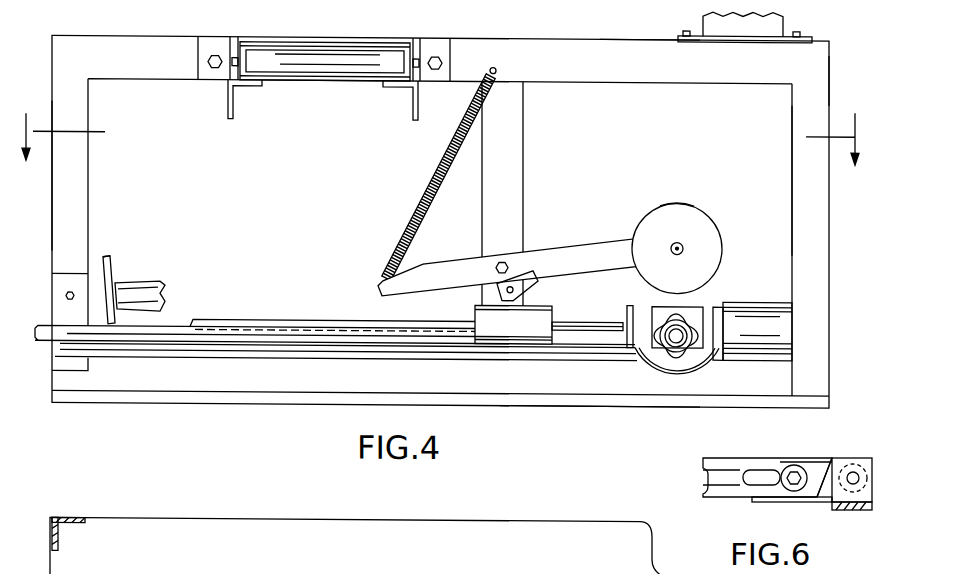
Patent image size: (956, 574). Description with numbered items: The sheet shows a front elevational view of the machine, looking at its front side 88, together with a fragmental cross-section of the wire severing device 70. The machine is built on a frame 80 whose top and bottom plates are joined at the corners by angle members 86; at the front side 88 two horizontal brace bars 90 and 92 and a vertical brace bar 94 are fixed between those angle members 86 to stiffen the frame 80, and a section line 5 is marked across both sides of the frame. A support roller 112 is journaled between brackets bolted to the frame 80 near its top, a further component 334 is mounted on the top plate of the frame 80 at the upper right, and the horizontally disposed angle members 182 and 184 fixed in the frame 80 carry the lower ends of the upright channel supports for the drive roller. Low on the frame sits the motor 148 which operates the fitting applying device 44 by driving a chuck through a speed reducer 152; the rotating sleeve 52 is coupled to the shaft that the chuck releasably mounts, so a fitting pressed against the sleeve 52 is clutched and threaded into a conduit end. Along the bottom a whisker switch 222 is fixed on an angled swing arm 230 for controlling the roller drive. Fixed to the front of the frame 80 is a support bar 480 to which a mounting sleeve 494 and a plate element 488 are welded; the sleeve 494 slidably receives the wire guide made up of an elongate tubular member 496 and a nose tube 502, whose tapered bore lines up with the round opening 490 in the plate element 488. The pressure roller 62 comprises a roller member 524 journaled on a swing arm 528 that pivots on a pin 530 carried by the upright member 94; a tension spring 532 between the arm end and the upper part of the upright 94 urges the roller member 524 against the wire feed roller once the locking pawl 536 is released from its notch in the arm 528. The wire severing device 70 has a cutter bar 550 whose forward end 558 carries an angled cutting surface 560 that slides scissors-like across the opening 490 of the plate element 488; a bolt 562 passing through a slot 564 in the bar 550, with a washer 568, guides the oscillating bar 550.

In FIG. 4, the section line 5- 5 is at (440, 127).
In FIG. 4, the power actuated fitting applying device 44 is at (673, 358).
In FIG. 4, the rotating sleeve 52 is at (695, 350).
In FIG. 4, the pressure roller 62 is at (725, 227).
In FIG. 6, the wire severing device 70 is at (833, 452).
In FIG. 4, the frame 80 is at (830, 61).
In FIG. 4, the angle members 86 is at (73, 212).
In FIG. 4, the front side 88 is at (128, 418).
In FIG. 4, the horizontal brace bar 90 is at (634, 78).
In FIG. 4, the horizontal brace bar 92 is at (588, 389).
In FIG. 4, the vertical brace bar 94 is at (513, 161).
In FIG. 4, the support roller 112 is at (322, 60).
In FIG. 4, the motor 148 is at (765, 308).
In FIG. 4, the speed reducer 152 is at (698, 303).
In FIG. 4, the angle member 182 is at (412, 106).
In FIG. 4, the angle member 184 is at (228, 105).
In FIG. 4, the whisker switch 222 is at (146, 281).
In FIG. 4, the angled swing arm 230 is at (143, 238).
In FIG. 4, the motor 334 is at (775, 19).
In FIG. 6, the support bar 480 is at (858, 510).
In FIG. 4, the plate element 488 is at (628, 302).
In FIG. 6, the plate element 488 is at (837, 490).
In FIG. 6, the opening 490 is at (855, 470).
In FIG. 4, the mounting sleeve 494 is at (535, 320).
In FIG. 4, the elongate tubular member 496 is at (315, 321).
In FIG. 4, the nose tube 502 is at (578, 320).
In FIG. 4, the roller member 524 is at (680, 196).
In FIG. 4, the swing arm 528 is at (608, 246).
In FIG. 4, the pin 530 is at (505, 258).
In FIG. 4, the tension spring 532 is at (412, 210).
In FIG. 4, the locking pawl 536 is at (530, 274).
In FIG. 6, the cutter bar 550 is at (717, 472).
In FIG. 6, the forward end 558 is at (773, 462).
In FIG. 6, the angled cutting surface 560 is at (823, 487).
In FIG. 6, the bolt 562 is at (793, 465).
In FIG. 6, the slot 564 is at (747, 473).
In FIG. 6, the washer 568 is at (770, 500).